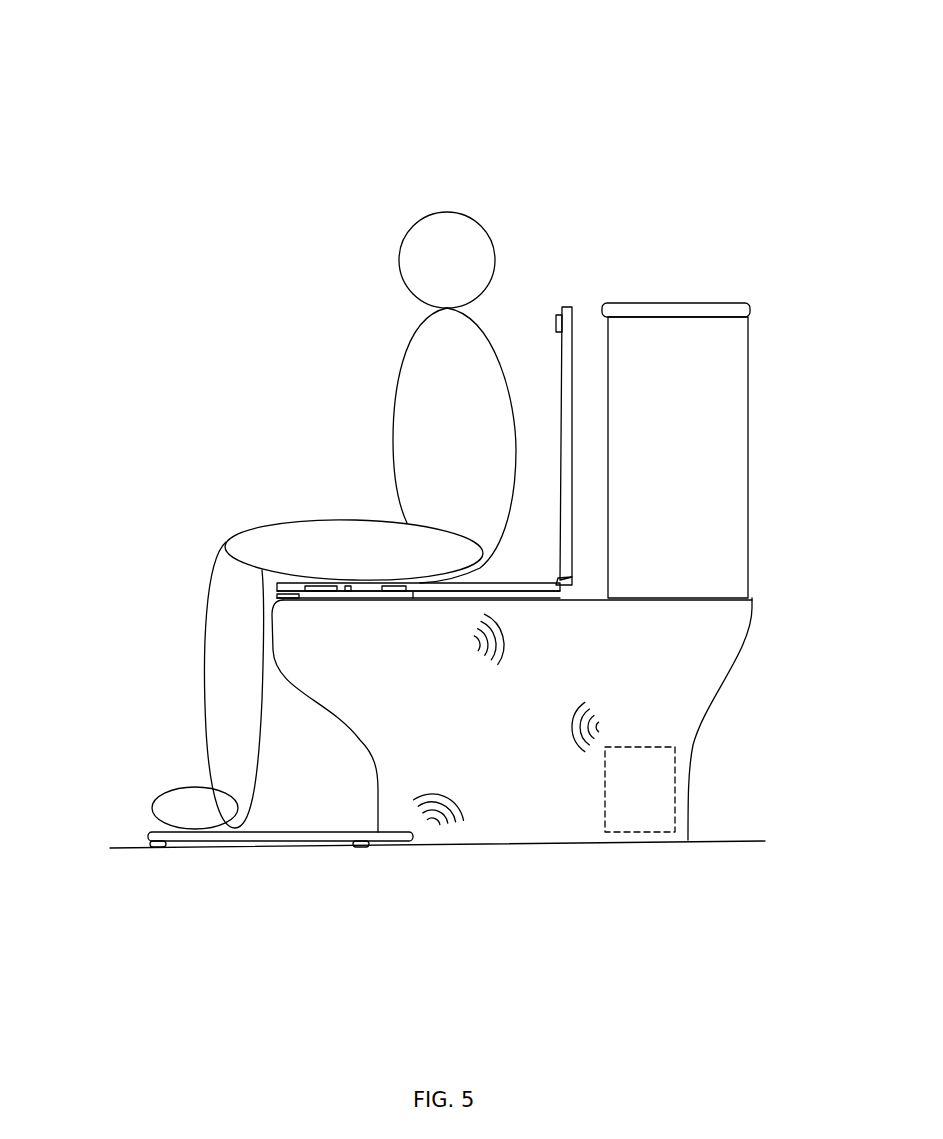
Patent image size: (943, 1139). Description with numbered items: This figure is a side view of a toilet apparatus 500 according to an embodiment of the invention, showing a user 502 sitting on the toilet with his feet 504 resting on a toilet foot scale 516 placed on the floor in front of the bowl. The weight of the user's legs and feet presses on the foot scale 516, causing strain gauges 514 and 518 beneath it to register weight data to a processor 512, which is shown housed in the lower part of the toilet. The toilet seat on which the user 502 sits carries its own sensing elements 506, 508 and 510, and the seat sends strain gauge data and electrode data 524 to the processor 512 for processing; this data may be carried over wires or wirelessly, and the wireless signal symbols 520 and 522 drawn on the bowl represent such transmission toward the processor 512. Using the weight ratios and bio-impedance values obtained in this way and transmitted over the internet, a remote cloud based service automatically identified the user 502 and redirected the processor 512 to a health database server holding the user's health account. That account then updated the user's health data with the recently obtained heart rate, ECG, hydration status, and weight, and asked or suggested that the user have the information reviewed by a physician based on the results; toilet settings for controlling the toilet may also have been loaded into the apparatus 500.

The system 500 is at (183, 93).
The user 502 is at (393, 385).
The feet 504 is at (167, 803).
The seat sensor 506 is at (292, 600).
The seat sensor 508 is at (334, 593).
The seat sensor 510 is at (414, 592).
The processor 512 is at (655, 790).
The strain gauge 514 is at (160, 848).
The toilet foot scale 516 is at (275, 846).
The strain gauge 518 is at (360, 848).
The wireless signal 520 is at (440, 786).
The wireless signal 522 is at (565, 721).
The electrode data 524 is at (503, 655).